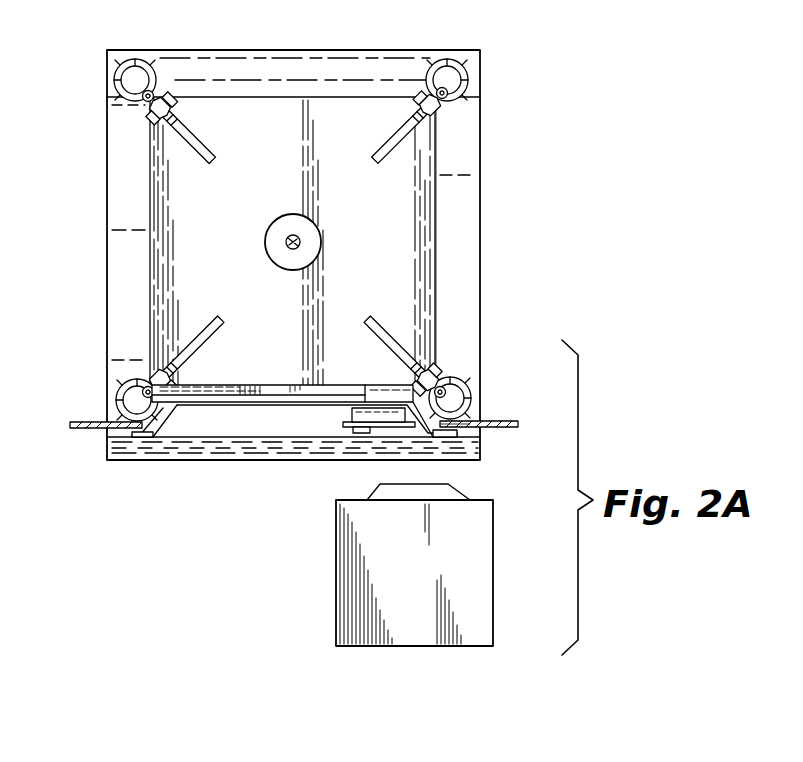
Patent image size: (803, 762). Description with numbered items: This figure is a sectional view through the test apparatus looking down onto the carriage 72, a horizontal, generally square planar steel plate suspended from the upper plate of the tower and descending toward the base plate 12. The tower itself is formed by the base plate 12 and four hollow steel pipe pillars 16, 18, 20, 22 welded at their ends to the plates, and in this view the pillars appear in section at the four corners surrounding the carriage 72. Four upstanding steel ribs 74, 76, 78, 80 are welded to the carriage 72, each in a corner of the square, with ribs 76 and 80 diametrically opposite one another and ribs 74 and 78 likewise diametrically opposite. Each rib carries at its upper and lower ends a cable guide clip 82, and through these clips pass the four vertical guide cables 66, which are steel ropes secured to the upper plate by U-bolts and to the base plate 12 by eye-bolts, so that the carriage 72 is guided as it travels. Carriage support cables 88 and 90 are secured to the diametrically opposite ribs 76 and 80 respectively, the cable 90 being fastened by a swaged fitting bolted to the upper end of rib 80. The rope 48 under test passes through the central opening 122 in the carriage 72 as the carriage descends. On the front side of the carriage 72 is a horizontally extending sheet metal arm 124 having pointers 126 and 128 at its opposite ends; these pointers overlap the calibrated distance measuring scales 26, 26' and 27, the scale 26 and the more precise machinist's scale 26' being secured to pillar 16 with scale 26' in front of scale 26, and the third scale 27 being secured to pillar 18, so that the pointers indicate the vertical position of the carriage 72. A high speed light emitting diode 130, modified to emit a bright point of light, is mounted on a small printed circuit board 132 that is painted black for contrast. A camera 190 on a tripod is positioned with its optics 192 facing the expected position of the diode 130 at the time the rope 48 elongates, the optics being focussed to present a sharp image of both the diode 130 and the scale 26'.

The base plate 12 is at (294, 50).
The pillar 16 is at (465, 388).
The pillar 18 is at (115, 393).
The pillar 20 is at (449, 60).
The pillar 22 is at (115, 80).
The calibrated distance measuring scale 26 is at (499, 448).
The second scale 26' is at (481, 403).
The third scale 27 is at (83, 430).
The rope 48 is at (298, 235).
The vertical guide cable 66 is at (156, 106).
The carriage 72 is at (425, 168).
The upstanding rib 74 is at (215, 325).
The upstanding rib 76 is at (372, 322).
The upstanding rib 78 is at (382, 150).
The upstanding rib 80 is at (212, 152).
The cable guide clip 82 is at (170, 102).
The carriage support cable 88 is at (416, 350).
The carriage support cable 90 is at (163, 125).
The central opening 122 is at (322, 244).
The horizontally extending arm 124 is at (250, 405).
The pointer 126 is at (445, 437).
The pointer 128 is at (140, 437).
The diode 130 is at (360, 432).
The printed circuit board 132 is at (380, 423).
The camera 190 is at (490, 625).
The optics 192 is at (430, 497).